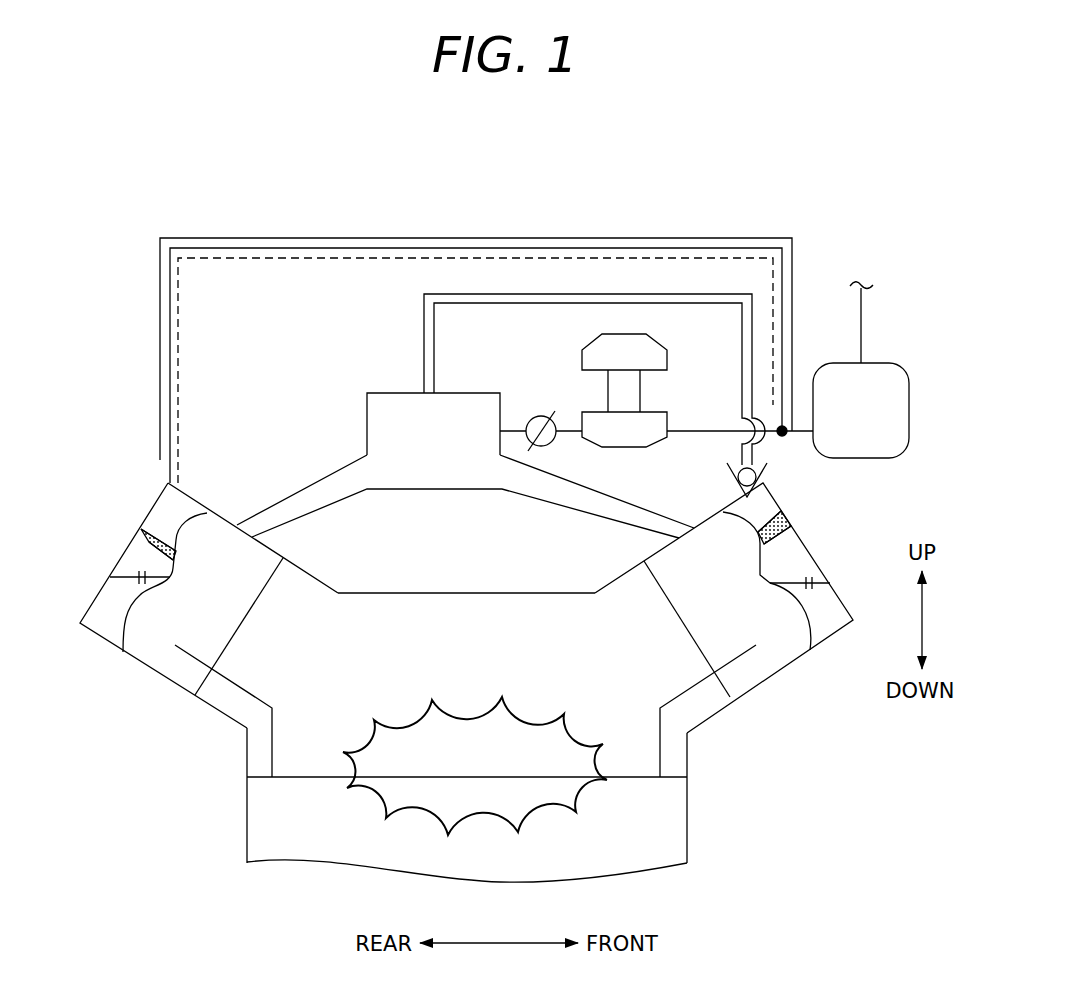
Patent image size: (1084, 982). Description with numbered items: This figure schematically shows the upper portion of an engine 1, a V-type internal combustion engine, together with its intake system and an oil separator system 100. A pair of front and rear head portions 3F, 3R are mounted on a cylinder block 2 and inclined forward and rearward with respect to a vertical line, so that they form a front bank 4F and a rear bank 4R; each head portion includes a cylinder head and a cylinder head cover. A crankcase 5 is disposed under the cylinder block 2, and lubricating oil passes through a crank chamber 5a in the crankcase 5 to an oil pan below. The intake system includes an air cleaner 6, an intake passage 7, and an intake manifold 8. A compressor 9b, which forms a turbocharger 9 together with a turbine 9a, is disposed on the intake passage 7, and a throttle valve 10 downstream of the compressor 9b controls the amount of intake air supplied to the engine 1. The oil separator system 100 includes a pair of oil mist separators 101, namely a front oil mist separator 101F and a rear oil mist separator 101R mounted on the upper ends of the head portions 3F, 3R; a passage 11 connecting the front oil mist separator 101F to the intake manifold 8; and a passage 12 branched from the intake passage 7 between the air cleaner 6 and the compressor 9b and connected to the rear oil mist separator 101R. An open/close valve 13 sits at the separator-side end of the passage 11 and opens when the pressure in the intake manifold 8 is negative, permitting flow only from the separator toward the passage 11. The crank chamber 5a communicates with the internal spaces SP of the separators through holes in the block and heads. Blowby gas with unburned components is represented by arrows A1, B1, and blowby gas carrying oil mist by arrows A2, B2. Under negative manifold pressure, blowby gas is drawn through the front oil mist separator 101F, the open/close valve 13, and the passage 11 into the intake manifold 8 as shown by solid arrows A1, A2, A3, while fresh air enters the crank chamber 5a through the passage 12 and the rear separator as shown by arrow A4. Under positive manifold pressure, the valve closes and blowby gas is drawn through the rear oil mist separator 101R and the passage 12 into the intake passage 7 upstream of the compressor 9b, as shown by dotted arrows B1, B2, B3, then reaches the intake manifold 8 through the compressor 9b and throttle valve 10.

The engine 1 is at (483, 789).
The cylinder block 2 is at (472, 711).
The rear head portion 3R is at (132, 658).
The front head portion 3F is at (773, 677).
The rear bank 4R is at (189, 570).
The front bank 4F is at (763, 603).
The crankcase 5 is at (436, 805).
The crank chamber 5a is at (277, 825).
The air cleaner 6 is at (909, 403).
The intake passage 7 is at (690, 437).
The intake manifold 8 is at (367, 427).
The turbocharger 9 is at (660, 390).
The turbine 9a is at (667, 355).
The compressor 9b is at (642, 414).
The throttle valve 10 is at (538, 414).
The passage 11 is at (571, 379).
The passage 12 is at (476, 319).
The open/close valve 13 is at (755, 475).
The oil separator system 100 is at (724, 190).
The oil mist separators 101 is at (486, 572).
The rear oil mist separator 101R is at (119, 486).
The front oil mist separator 101F is at (783, 501).
The internal space SP is at (145, 557).
The arrow A1 is at (645, 640).
The arrow A2 is at (692, 703).
The arrow A3 is at (424, 393).
The arrow A4 is at (160, 474).
The arrow B1 is at (280, 635).
The arrow B2 is at (237, 698).
The arrow B3 is at (773, 418).